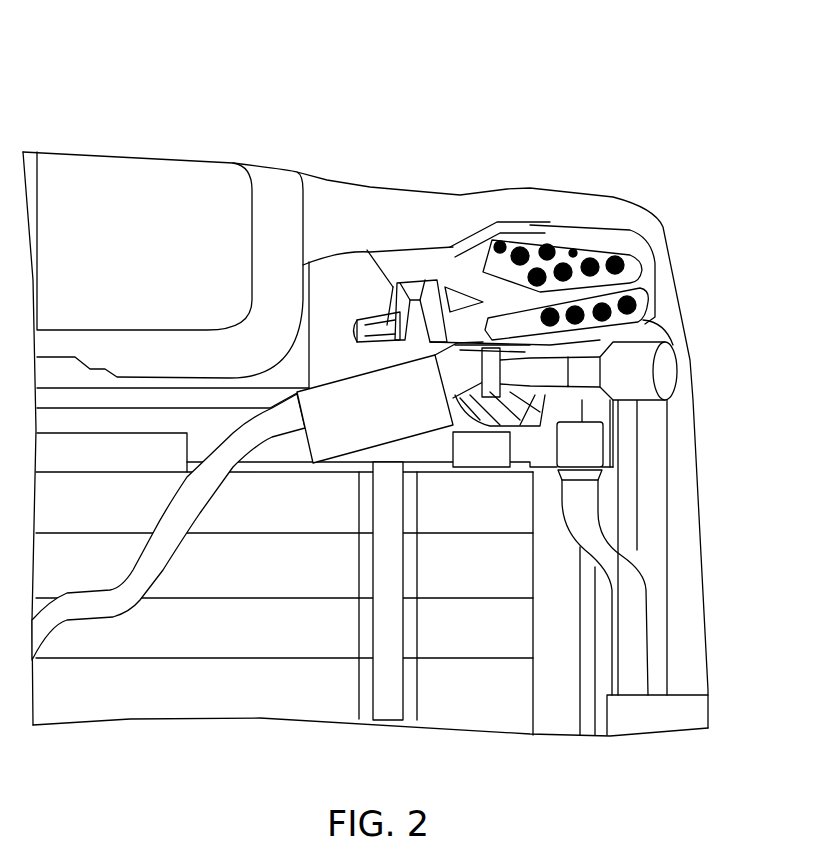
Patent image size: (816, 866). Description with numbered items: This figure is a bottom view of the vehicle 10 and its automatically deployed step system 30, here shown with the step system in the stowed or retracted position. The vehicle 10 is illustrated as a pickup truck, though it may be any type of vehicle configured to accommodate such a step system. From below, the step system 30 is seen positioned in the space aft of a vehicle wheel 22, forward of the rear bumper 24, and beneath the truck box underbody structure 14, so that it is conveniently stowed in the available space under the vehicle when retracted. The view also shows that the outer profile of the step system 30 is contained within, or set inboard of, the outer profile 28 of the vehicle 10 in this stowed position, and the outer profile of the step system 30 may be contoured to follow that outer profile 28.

The vehicle 10 is at (78, 87).
The truck box underbody structure 14 is at (287, 635).
The vehicle wheel 22 is at (150, 172).
The rear bumper 24 is at (685, 535).
The outer profile 28 is at (660, 220).
The automatically deployed step system 30 is at (467, 218).